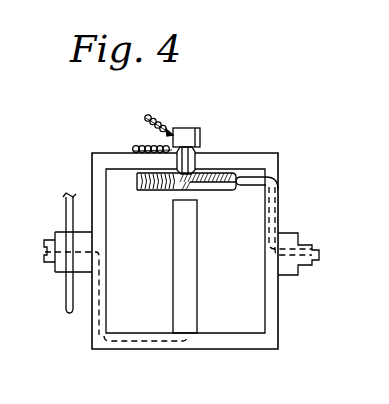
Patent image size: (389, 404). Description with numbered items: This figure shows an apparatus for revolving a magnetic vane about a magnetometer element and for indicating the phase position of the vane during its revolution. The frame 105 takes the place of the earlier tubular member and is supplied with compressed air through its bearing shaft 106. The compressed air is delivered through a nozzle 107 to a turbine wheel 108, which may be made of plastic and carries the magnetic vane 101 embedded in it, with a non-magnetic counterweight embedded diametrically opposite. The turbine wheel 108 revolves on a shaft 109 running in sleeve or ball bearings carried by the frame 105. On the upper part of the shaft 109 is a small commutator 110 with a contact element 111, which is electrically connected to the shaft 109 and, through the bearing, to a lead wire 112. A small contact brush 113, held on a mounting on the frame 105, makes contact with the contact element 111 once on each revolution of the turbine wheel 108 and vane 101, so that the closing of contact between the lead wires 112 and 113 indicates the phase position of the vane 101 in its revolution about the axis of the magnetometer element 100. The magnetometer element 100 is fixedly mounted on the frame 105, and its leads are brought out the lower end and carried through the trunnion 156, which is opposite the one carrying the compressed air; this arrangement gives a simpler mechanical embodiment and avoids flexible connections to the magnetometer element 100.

The magnetometer element 100 is at (198, 255).
The magnetic vane 101 is at (210, 191).
The frame 105 is at (276, 298).
The bearing shaft 106 is at (309, 244).
The nozzle 107 is at (266, 182).
The turbine wheel 108 is at (144, 191).
The shaft 109 is at (198, 161).
The commutator 110 is at (201, 135).
The contact element 111 is at (190, 127).
The lead wire 112 is at (133, 150).
The contact brush 113 is at (149, 116).
The trunnion 156 is at (53, 240).